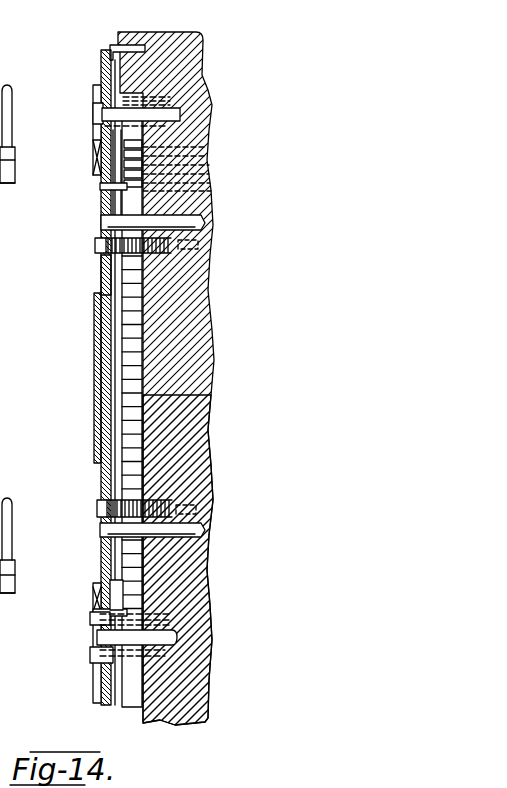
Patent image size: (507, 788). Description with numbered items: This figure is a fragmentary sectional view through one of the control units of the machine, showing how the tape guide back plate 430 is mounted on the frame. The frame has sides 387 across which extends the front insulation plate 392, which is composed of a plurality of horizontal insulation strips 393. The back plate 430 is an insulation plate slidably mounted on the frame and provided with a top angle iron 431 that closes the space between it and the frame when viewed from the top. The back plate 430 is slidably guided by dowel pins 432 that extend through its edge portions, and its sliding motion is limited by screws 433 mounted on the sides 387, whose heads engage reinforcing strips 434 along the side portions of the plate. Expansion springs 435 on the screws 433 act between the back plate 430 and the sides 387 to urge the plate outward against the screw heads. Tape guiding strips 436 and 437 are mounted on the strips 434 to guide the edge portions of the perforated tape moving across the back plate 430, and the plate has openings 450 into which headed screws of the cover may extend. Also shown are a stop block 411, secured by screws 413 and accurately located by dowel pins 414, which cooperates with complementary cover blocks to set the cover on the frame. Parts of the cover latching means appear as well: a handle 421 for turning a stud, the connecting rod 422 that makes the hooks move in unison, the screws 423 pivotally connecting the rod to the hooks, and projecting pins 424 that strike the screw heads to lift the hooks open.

The sides 387 is at (175, 687).
The front insulation plate 392 is at (143, 365).
The horizontal insulation strips 393 is at (130, 353).
The stop blocks 411 is at (0, 70).
The screws 413 is at (165, 97).
The dowel pins 414 is at (180, 111).
The handle 421 is at (13, 95).
The connecting rod 422 is at (18, 342).
The screws 423 is at (8, 140).
The projecting pins 424 is at (0, 193).
The tape guide back plate 430 is at (100, 475).
The top angle iron 431 is at (106, 47).
The dowel pins 432 is at (205, 221).
The screws 433 is at (98, 243).
The strips 434 is at (103, 265).
The expansion springs 435 is at (174, 253).
The tape guiding strips 436 is at (93, 147).
The tape guiding strips 437 is at (95, 315).
The openings 450 is at (102, 187).